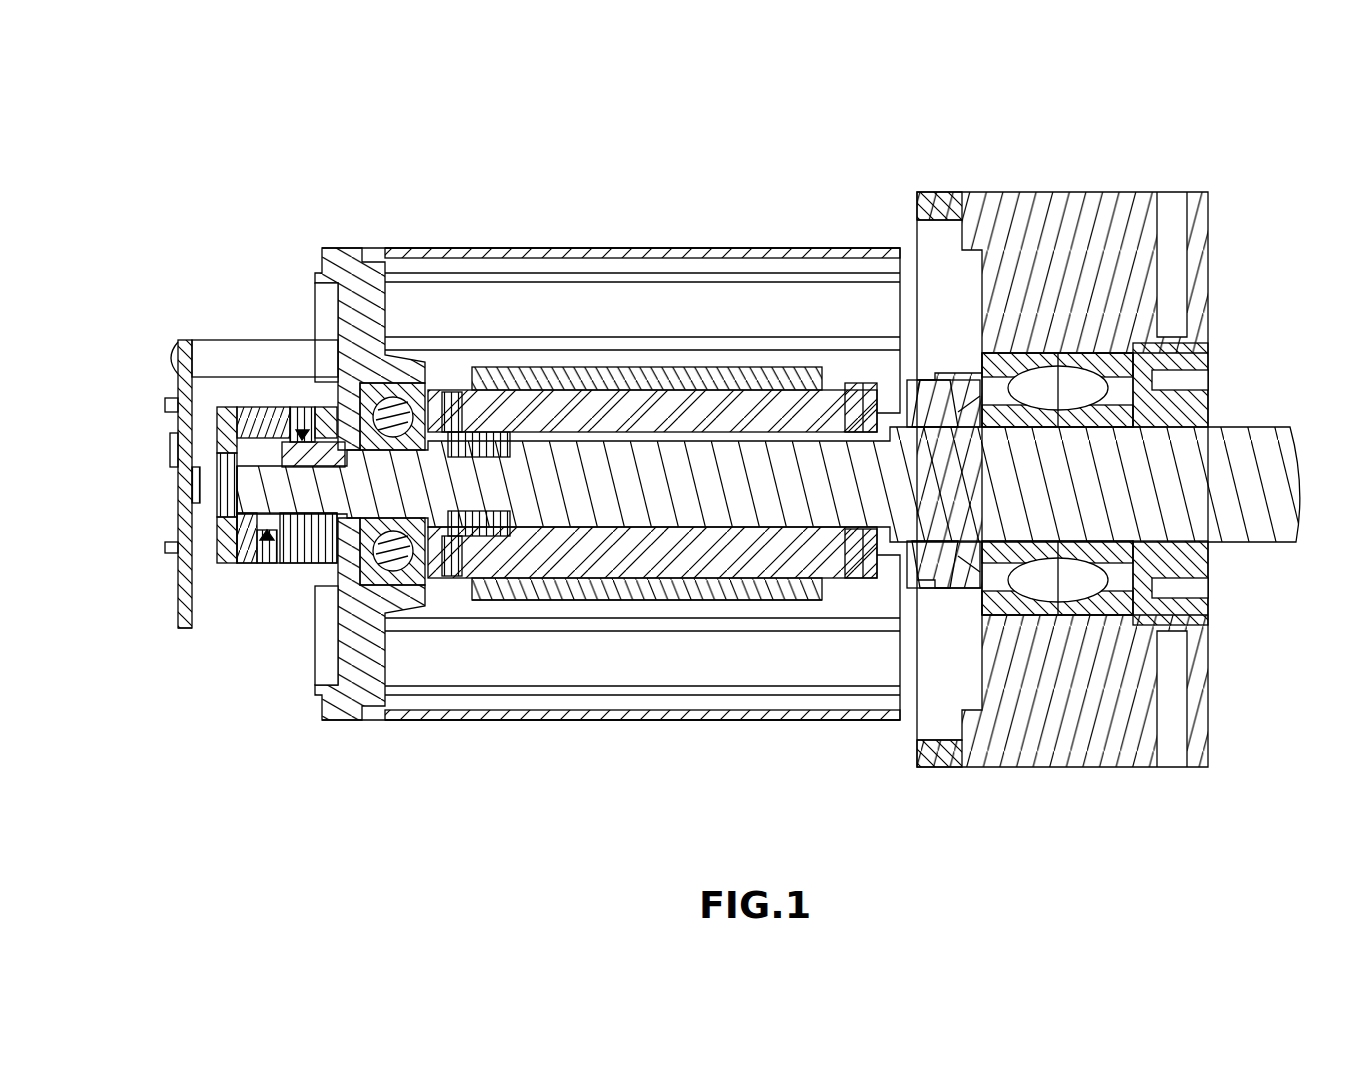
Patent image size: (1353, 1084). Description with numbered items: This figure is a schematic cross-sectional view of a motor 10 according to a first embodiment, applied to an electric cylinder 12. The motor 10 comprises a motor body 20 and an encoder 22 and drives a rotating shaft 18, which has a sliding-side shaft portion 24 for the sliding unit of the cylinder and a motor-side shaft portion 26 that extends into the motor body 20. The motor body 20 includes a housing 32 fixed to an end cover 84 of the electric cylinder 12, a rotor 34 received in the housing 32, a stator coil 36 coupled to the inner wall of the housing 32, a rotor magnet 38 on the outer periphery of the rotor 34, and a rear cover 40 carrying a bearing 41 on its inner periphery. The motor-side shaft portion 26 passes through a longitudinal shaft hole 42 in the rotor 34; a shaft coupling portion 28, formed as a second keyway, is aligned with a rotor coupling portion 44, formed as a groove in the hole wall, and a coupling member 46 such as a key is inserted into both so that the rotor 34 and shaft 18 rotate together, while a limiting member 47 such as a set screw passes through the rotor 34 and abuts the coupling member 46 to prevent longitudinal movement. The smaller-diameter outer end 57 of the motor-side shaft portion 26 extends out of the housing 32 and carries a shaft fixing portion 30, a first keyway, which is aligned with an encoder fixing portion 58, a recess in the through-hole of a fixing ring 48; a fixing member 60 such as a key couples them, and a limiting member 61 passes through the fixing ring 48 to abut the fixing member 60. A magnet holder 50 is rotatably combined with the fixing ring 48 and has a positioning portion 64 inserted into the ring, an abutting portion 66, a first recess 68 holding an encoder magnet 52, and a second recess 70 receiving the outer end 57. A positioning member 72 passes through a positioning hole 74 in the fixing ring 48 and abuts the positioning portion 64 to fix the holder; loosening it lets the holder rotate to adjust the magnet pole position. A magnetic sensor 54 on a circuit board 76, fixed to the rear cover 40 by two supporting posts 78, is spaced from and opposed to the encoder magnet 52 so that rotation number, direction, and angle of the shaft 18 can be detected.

The motor 10 is at (649, 200).
The electric cylinder 12 is at (1088, 172).
The rotating shaft 18 is at (1263, 532).
The motor body 20 is at (570, 760).
The encoder 22 is at (162, 735).
The sliding-side shaft portion 24 is at (1160, 485).
The motor-side shaft portion 26 is at (667, 467).
The shaft coupling portion 28 is at (488, 600).
The shaft fixing portion 30 is at (288, 515).
The housing 32 is at (735, 249).
The rotor 34 is at (858, 565).
The stator coil 36 is at (802, 683).
The rotor magnet 38 is at (663, 580).
The rear cover 40 is at (340, 706).
The bearing 41 is at (372, 720).
The shaft hole 42 is at (622, 580).
The rotor coupling portion 44 is at (480, 520).
The coupling member 46 is at (470, 432).
The limiting member 47 is at (447, 392).
The fixing ring 48 is at (307, 563).
The magnet holder 50 is at (227, 407).
The encoder magnet 52 is at (220, 533).
The magnetic sensor 54 is at (220, 493).
The outer end 57 is at (262, 407).
The encoder fixing portion 58 is at (340, 407).
The fixing member 60 is at (310, 442).
The limiting member 61 is at (304, 407).
The positioning portion 64 is at (280, 518).
The abutting portion 66 is at (220, 473).
The first recess 68 is at (213, 443).
The second recess 70 is at (267, 523).
The positioning member 72 is at (262, 563).
The positioning hole 74 is at (253, 563).
The circuit board 76 is at (176, 392).
The supporting posts 78 is at (212, 362).
The end cover 84 is at (928, 768).